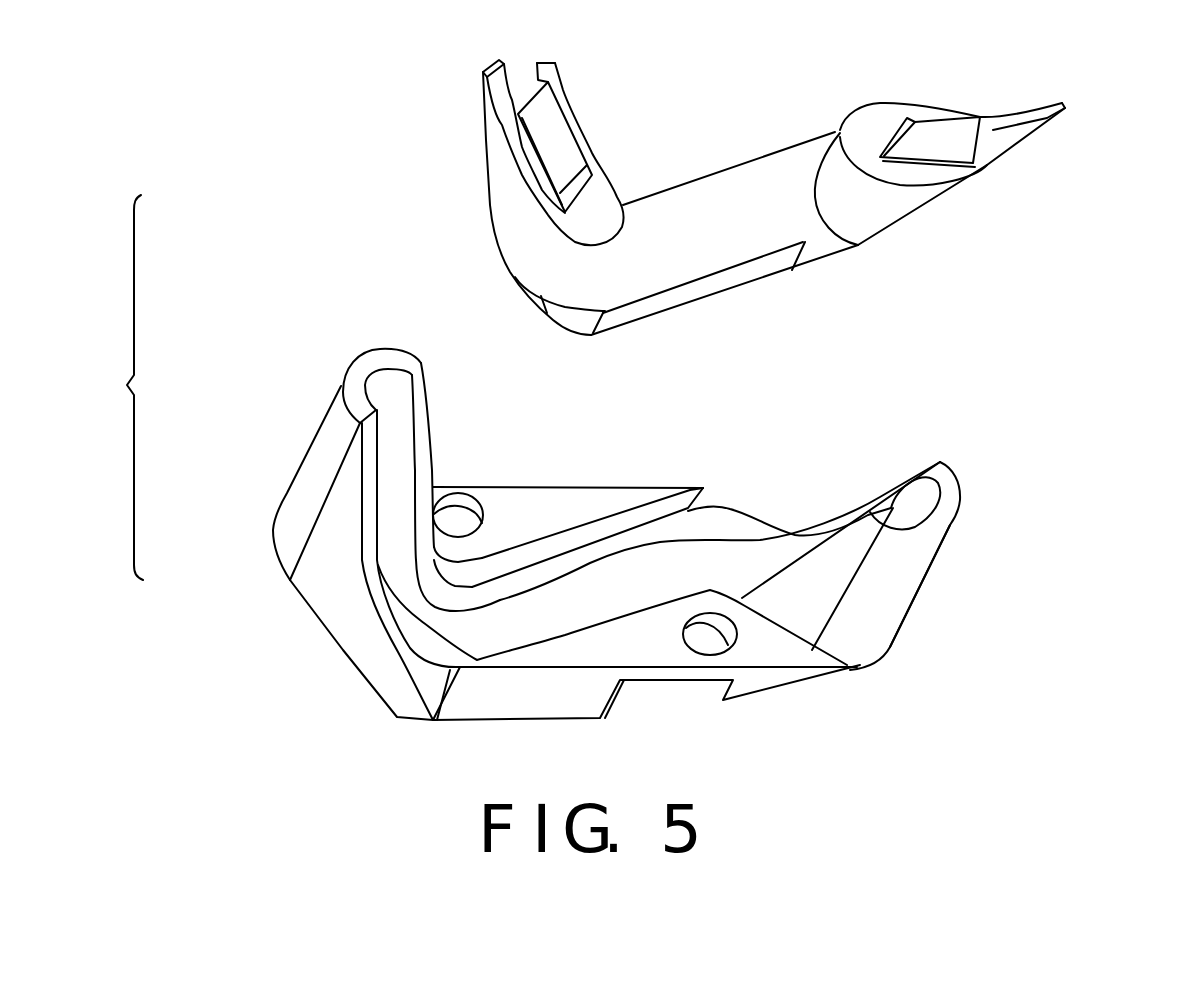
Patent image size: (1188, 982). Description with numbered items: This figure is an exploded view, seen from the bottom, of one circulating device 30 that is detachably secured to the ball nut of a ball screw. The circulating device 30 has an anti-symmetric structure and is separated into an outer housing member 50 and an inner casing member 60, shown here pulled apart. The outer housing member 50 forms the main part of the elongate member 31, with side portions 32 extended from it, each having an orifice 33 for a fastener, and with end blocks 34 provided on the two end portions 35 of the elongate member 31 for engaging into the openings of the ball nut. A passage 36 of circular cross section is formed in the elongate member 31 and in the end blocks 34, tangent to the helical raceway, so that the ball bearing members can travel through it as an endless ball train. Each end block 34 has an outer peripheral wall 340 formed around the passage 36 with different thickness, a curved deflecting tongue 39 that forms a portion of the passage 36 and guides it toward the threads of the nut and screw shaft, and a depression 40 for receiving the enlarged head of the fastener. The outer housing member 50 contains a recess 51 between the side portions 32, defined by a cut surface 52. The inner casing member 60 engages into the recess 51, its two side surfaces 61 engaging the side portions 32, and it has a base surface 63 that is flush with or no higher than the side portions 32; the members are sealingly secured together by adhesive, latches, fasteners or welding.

The circulating device 30 is at (1090, 235).
The elongate member 31 is at (617, 282).
The side portions 32 is at (515, 500).
The orifice 33 is at (713, 643).
The end blocks 34 is at (905, 575).
The end portions 35 is at (897, 632).
The passage 36 is at (722, 562).
The deflecting tongue 39 is at (923, 140).
The depression 40 is at (680, 692).
The outer housing member 50 is at (358, 653).
The recess 51 is at (628, 533).
The cut surface 52 is at (447, 598).
The inner casing member 60 is at (485, 208).
The side surfaces 61 is at (748, 276).
The base surface 63 is at (788, 212).
The outer peripheral wall 340 is at (367, 457).